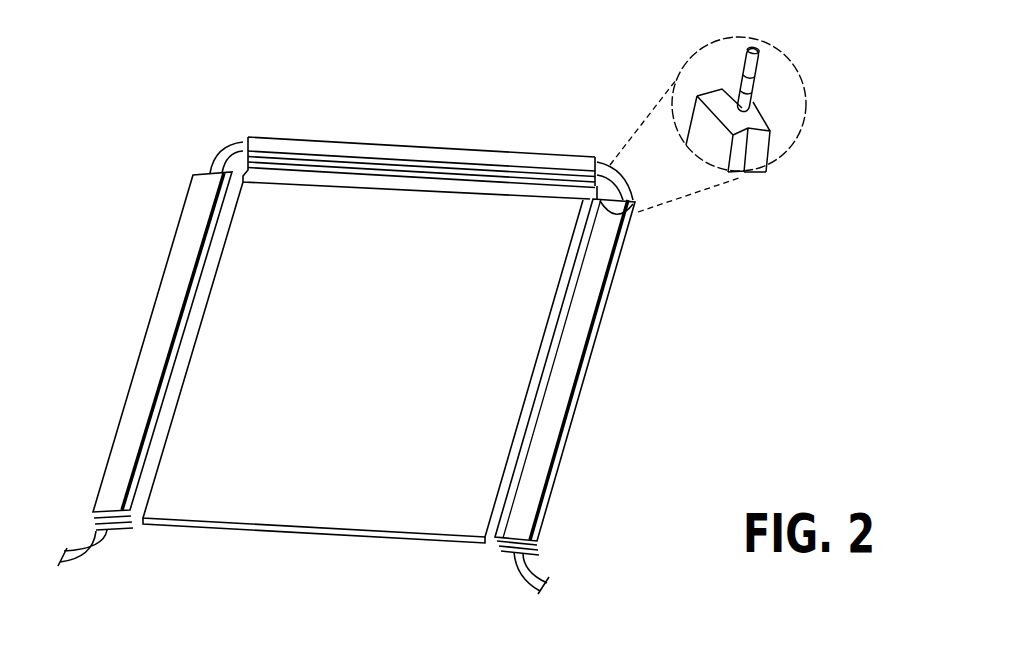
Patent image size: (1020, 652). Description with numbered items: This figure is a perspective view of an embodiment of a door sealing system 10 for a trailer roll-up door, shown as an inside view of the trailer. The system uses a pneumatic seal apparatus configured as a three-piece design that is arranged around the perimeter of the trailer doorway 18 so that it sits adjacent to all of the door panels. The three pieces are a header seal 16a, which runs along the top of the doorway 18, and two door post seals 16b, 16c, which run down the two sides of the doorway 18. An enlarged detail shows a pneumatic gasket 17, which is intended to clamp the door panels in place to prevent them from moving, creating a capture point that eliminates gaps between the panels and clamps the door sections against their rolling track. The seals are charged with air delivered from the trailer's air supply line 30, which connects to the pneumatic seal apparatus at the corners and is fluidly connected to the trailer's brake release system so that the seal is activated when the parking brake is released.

The door sealing system 10 is at (178, 56).
The header seal 16a is at (442, 157).
The door post seal 16b is at (157, 330).
The door post seal 16c is at (577, 347).
The pneumatic gasket 17 is at (752, 82).
The trailer doorway 18 is at (272, 504).
The air supply line 30 is at (228, 150).